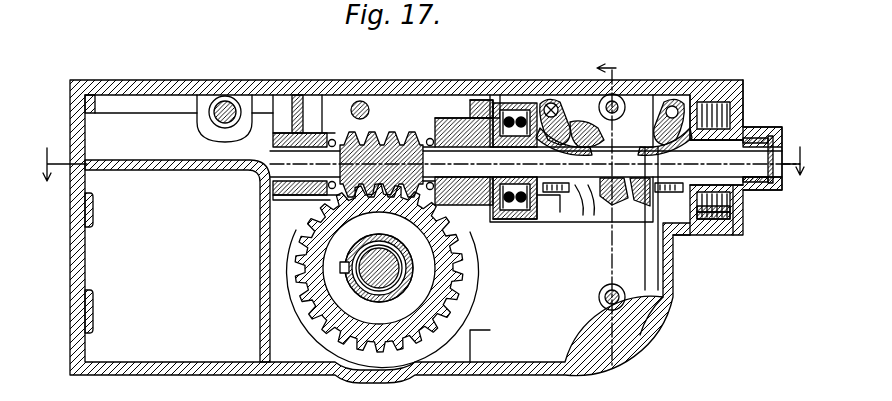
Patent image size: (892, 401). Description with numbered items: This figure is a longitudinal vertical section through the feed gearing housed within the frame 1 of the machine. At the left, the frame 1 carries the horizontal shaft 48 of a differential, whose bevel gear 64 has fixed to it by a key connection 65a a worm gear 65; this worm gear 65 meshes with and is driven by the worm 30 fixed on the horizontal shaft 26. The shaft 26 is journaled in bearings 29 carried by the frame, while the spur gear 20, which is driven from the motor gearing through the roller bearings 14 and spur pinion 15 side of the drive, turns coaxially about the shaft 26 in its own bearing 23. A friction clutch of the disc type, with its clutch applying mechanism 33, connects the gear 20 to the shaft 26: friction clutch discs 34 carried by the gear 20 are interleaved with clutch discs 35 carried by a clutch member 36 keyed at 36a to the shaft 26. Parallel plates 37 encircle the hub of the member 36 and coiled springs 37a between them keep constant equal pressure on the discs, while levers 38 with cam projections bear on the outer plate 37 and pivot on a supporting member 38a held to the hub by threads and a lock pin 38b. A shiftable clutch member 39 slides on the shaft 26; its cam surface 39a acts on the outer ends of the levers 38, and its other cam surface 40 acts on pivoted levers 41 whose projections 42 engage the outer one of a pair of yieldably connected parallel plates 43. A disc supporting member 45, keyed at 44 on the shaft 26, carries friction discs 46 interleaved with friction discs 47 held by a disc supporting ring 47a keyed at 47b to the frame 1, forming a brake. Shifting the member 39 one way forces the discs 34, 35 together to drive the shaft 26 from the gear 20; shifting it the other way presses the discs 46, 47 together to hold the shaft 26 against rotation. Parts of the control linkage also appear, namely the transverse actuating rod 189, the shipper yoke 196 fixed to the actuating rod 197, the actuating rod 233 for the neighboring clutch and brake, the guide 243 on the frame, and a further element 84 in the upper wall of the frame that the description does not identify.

The frame 1 is at (386, 77).
The roller bearings 14 is at (427, 175).
The spur pinion 15 is at (611, 215).
The spur gear 20 is at (533, 214).
The bearing 23 is at (428, 195).
The horizontal shaft 26 is at (755, 160).
The bearings 29 is at (304, 128).
The worm 30 is at (384, 143).
The clutch applying mechanism 33 is at (566, 112).
The friction clutch discs 34 is at (508, 118).
The clutch discs 35 is at (512, 122).
The clutch member 36 is at (498, 118).
The key 36a is at (486, 100).
The parallel plates 37 is at (541, 215).
The coiled springs 37a is at (553, 100).
The levers 38 is at (578, 120).
The supporting member 38a is at (572, 194).
The lock pin 38b is at (590, 205).
The clutch member 39 is at (670, 100).
The cam surface 39a is at (604, 200).
The cam surface 40 is at (636, 202).
The pivoted levers 41 is at (660, 120).
The projections 42 is at (699, 102).
The parallel plates 43 is at (698, 230).
The key 44 is at (748, 132).
The disc supporting member 45 is at (722, 203).
The friction discs 46 is at (730, 226).
The friction discs 47 is at (724, 235).
The disc supporting ring 47a is at (722, 90).
The key 47b is at (712, 240).
The shaft 48 is at (362, 280).
The bevel gear 64 is at (360, 262).
The worm gear 65 is at (318, 234).
The key connection 65a is at (340, 267).
The boss 84 is at (226, 100).
The actuating rod 189 is at (366, 104).
The shipper yoke 196 is at (622, 98).
The actuating rod 197 is at (616, 100).
The actuating rod 233 is at (628, 303).
The guide 243 is at (600, 300).